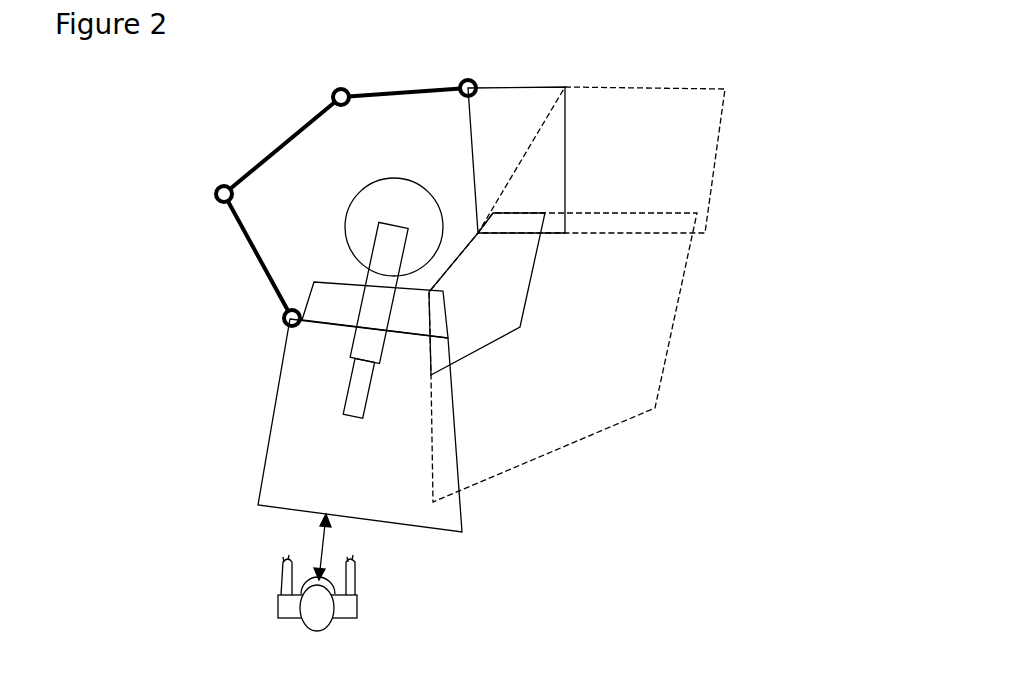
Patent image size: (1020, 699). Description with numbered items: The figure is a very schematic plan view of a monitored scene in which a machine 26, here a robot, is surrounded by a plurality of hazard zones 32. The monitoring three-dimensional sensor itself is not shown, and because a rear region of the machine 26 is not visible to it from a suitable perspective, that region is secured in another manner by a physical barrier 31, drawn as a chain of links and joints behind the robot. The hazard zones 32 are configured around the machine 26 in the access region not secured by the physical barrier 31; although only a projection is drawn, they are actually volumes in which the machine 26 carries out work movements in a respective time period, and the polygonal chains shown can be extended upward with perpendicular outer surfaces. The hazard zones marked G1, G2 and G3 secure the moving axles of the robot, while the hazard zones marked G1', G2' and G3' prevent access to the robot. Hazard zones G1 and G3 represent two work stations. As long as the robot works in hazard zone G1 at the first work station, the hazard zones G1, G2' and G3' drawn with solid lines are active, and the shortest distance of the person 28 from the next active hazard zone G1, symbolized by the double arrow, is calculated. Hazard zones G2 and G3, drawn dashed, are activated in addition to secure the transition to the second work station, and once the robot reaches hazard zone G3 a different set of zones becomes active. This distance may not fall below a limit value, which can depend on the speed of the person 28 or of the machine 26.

The machine 26 is at (398, 207).
The person 28 is at (342, 617).
The physical barrier 31 is at (252, 162).
The hazard zones 32 is at (620, 285).
The hazard zone G1 is at (360, 425).
The hazard zone G1' is at (375, 310).
The hazard zone G2 is at (491, 454).
The hazard zone G2' is at (487, 294).
The hazard zone G3 is at (667, 151).
The hazard zone G3' is at (516, 160).